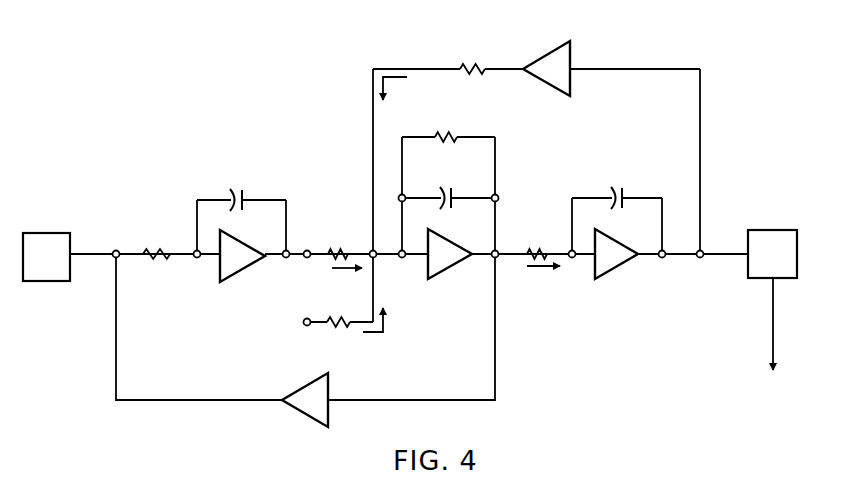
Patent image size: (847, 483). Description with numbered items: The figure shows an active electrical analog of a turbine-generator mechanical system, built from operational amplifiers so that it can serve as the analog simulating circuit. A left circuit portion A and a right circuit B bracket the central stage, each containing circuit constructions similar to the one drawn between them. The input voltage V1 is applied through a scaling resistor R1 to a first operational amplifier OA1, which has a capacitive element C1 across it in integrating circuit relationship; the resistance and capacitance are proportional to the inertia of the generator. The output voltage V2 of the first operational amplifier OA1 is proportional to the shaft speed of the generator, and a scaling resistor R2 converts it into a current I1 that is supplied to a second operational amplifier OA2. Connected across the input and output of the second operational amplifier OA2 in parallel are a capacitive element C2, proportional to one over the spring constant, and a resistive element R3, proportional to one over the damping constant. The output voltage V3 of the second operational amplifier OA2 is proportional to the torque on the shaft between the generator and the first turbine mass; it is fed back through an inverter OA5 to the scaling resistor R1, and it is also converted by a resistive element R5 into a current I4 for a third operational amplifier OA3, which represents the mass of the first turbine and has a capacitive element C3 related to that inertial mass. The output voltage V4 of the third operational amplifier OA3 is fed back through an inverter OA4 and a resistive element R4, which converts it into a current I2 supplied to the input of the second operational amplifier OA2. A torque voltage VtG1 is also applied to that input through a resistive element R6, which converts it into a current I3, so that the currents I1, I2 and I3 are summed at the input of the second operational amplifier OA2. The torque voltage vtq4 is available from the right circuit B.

The left circuit portion A is at (46, 257).
The right circuit B is at (772, 254).
The input voltage V1 is at (113, 250).
The scaling resistor R1 is at (151, 248).
The operational amplifier OA1 is at (229, 236).
The capacitive element C1 is at (236, 188).
The output voltage V2 is at (305, 258).
The scaling resistor R2 is at (337, 247).
The current I1 is at (338, 268).
The current I2 is at (391, 100).
The current I3 is at (378, 309).
The current I4 is at (530, 266).
The resistive element R6 is at (338, 328).
The voltage vtG1 VtG1 is at (303, 326).
The inverter OA5 is at (300, 389).
The resistive element R4 is at (467, 62).
The inverter OA4 is at (548, 57).
The resistive element R3 is at (452, 132).
The capacitive element C2 is at (470, 162).
The second operational amplifier OA2 is at (432, 238).
The output voltage V3 is at (493, 258).
The resistive element R5 is at (539, 248).
The capacitive element C3 is at (617, 185).
The third operational amplifier OA3 is at (599, 240).
The output voltage V4 is at (703, 250).
The torque voltage vtq4 is at (777, 334).